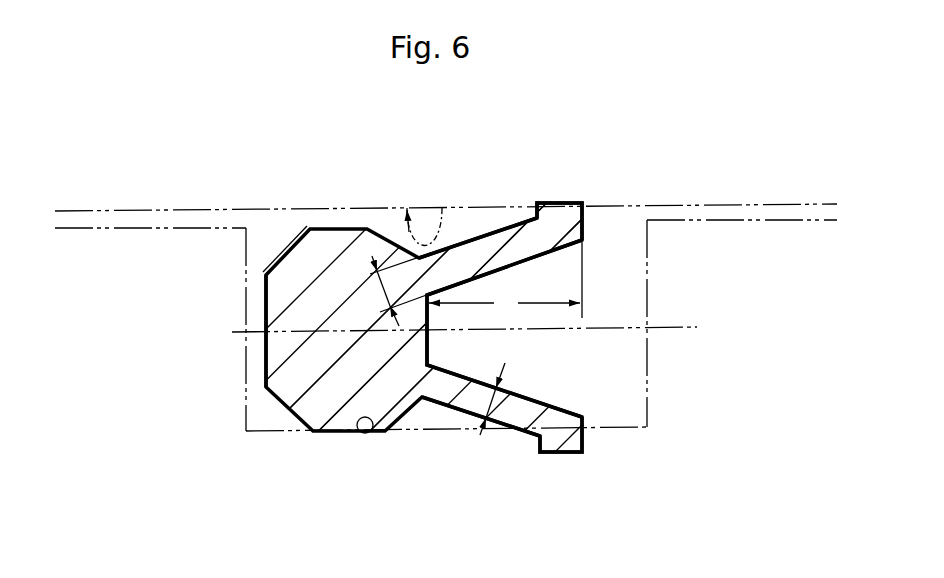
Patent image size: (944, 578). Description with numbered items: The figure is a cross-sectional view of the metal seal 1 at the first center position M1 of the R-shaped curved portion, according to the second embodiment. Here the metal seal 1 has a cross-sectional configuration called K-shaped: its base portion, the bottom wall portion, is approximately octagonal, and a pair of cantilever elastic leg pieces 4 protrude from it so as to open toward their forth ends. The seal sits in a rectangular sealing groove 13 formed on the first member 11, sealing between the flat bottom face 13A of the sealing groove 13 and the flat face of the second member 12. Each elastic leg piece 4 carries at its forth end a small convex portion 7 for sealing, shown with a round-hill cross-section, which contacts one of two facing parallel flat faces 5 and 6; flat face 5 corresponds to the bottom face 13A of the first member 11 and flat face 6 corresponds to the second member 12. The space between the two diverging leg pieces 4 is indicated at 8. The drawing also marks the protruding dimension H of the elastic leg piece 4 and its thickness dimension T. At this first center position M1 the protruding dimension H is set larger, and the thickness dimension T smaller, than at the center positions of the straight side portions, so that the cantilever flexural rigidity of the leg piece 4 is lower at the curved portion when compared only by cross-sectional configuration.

The metal seal 1 is at (323, 227).
The cantilever elastic leg piece 4 is at (505, 228).
The flat face 5 is at (375, 433).
The flat face 6 is at (444, 212).
The small convex portion 7 is at (560, 203).
The space between lips 8 is at (515, 347).
The first member 11 is at (782, 340).
The second member 12 is at (207, 170).
The sealing groove 13 is at (263, 418).
The bottom face 13A is at (431, 421).
The center position of the R-shaped curved portion M1 is at (264, 366).
The thickness dimension T is at (434, 362).
The protruding dimension H is at (505, 280).